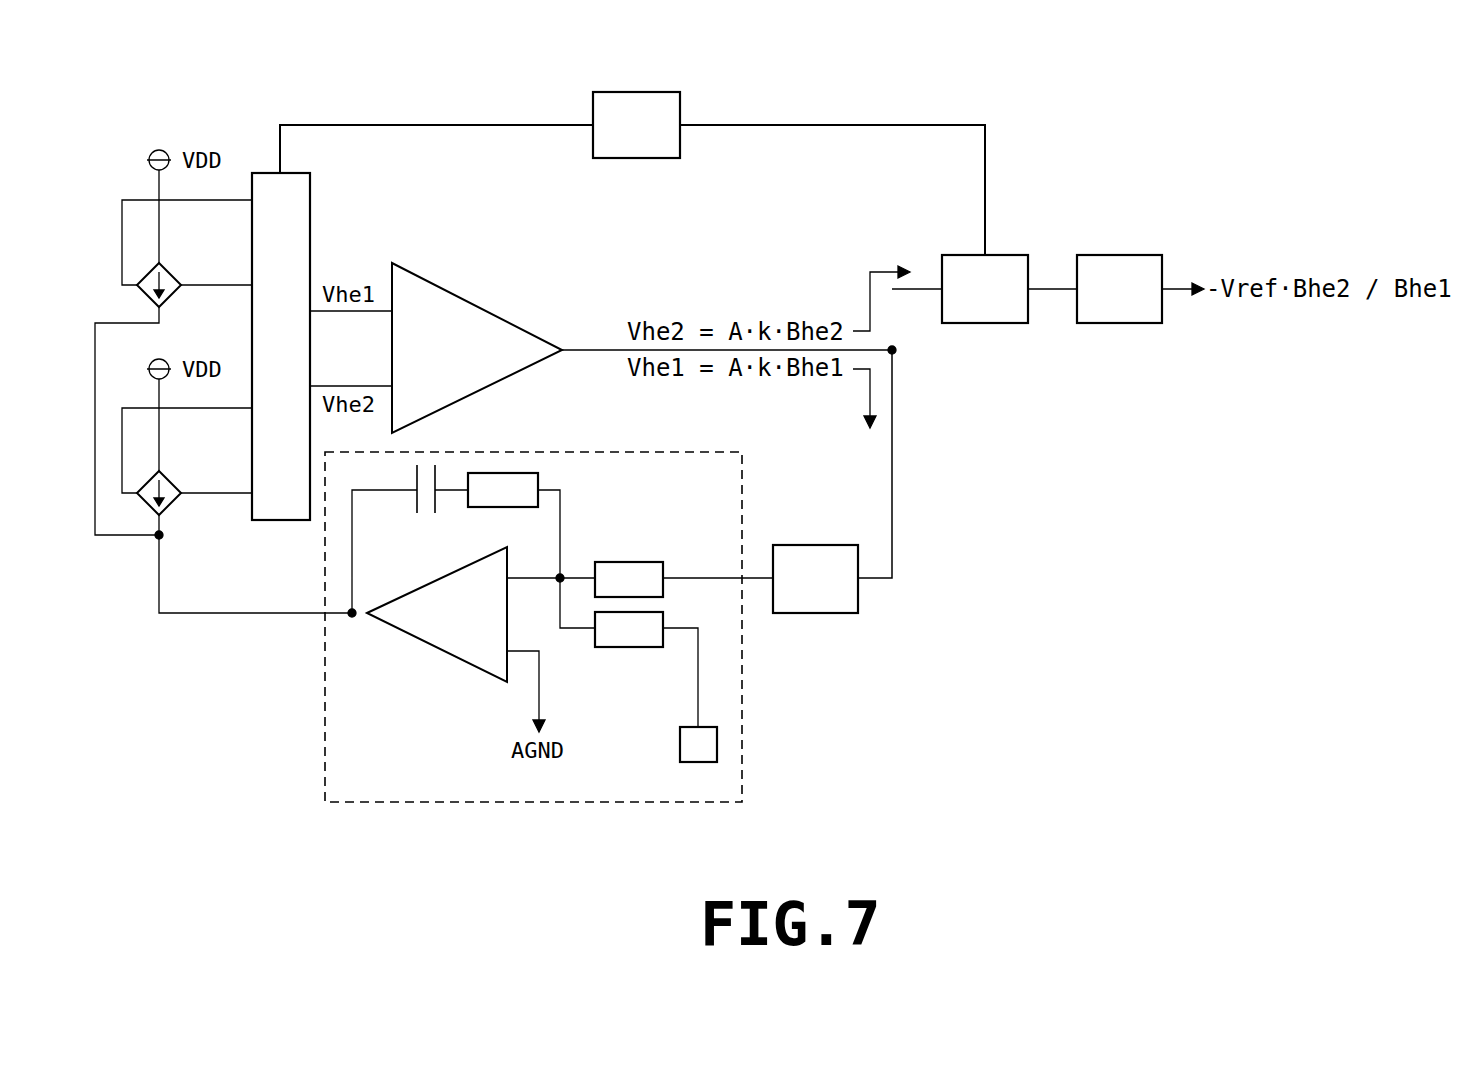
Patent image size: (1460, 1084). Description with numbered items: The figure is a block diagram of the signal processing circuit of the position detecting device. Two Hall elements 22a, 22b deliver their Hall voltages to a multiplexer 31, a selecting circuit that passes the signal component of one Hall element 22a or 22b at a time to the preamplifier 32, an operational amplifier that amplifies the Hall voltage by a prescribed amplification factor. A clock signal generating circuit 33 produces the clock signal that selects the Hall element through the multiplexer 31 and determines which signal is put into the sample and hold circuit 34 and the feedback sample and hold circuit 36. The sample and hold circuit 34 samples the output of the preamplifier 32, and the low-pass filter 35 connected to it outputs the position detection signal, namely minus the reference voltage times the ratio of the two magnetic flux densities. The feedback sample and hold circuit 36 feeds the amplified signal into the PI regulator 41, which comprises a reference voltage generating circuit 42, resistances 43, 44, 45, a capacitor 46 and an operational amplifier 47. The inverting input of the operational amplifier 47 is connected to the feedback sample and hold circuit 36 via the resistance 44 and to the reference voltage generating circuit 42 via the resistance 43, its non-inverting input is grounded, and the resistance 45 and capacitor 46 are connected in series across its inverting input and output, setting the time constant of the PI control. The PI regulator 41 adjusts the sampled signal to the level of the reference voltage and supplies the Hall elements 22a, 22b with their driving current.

The Hall element 22a is at (162, 263).
The Hall element 22b is at (162, 471).
The multiplexer 31 is at (310, 205).
The preamplifier 32 is at (450, 293).
The clock signal generating circuit 33 is at (635, 92).
The sample and hold circuit 34 is at (993, 255).
The low-pass filter 35 is at (1125, 255).
The feedback sample and hold circuit 36 is at (815, 545).
The PI regulator 41 is at (442, 802).
The reference voltage generating circuit 42 is at (680, 742).
The resistance 43 is at (627, 647).
The resistance 44 is at (627, 562).
The resistance 45 is at (502, 507).
The capacitor 46 is at (390, 520).
The operational amplifier 47 is at (435, 649).